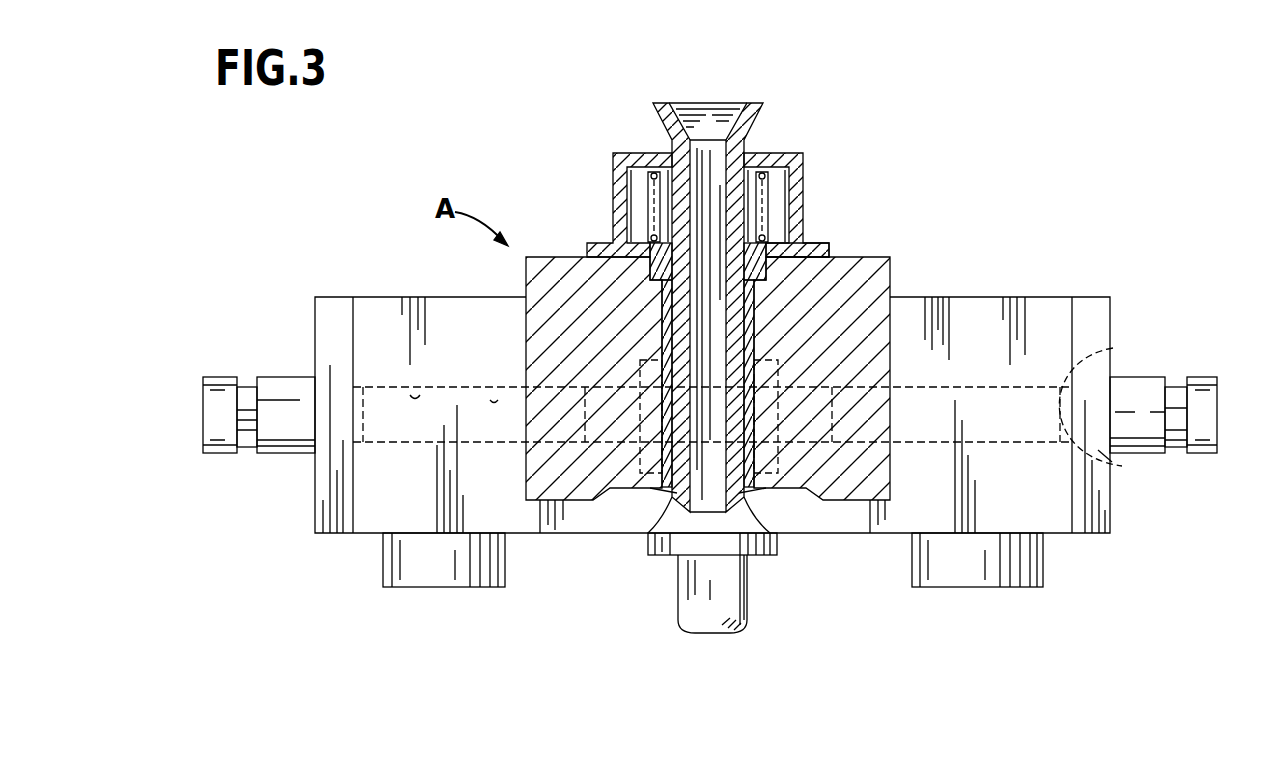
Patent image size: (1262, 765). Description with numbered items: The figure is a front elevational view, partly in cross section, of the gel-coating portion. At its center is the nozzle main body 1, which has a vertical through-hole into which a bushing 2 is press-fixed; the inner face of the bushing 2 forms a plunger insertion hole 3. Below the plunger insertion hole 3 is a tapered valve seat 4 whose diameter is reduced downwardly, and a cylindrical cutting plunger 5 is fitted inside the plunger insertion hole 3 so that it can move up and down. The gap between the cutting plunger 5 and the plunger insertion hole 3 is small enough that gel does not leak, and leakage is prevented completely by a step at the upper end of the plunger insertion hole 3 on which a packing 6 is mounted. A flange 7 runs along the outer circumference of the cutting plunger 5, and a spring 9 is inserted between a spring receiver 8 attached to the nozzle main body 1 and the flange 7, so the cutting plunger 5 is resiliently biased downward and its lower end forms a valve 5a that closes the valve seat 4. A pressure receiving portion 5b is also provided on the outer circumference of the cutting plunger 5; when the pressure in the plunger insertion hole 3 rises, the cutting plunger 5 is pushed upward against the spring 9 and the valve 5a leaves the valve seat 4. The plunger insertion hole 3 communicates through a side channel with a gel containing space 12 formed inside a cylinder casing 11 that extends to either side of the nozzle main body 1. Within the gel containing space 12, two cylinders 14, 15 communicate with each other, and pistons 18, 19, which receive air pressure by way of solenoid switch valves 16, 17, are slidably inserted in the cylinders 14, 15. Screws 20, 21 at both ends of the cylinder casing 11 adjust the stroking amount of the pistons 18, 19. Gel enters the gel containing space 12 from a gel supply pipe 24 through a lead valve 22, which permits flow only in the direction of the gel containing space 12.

The nozzle main body 1 is at (862, 262).
The bushing 2 is at (664, 310).
The plunger insertion hole 3 is at (750, 385).
The tapered valve seat 4 is at (745, 490).
The cutting plunger 5 is at (748, 284).
The valve 5a is at (772, 553).
The pressure receiving portion 5b is at (662, 455).
The packing 6 is at (760, 250).
The flange 7 is at (650, 237).
The spring receiver 8 is at (765, 153).
The spring 9 is at (650, 165).
The cylinder casing 11 is at (1013, 297).
The gel containing space 12 is at (638, 462).
The cylinder 14 is at (1100, 396).
The cylinder 15 is at (415, 398).
The solenoid switch valve 16 is at (1043, 553).
The solenoid switch valve 17 is at (392, 572).
The piston 18 is at (1113, 458).
The piston 19 is at (496, 404).
The screw 20 is at (1202, 380).
The screw 21 is at (222, 387).
The lead valve 22 is at (763, 558).
The gel supply pipe 24 is at (686, 605).